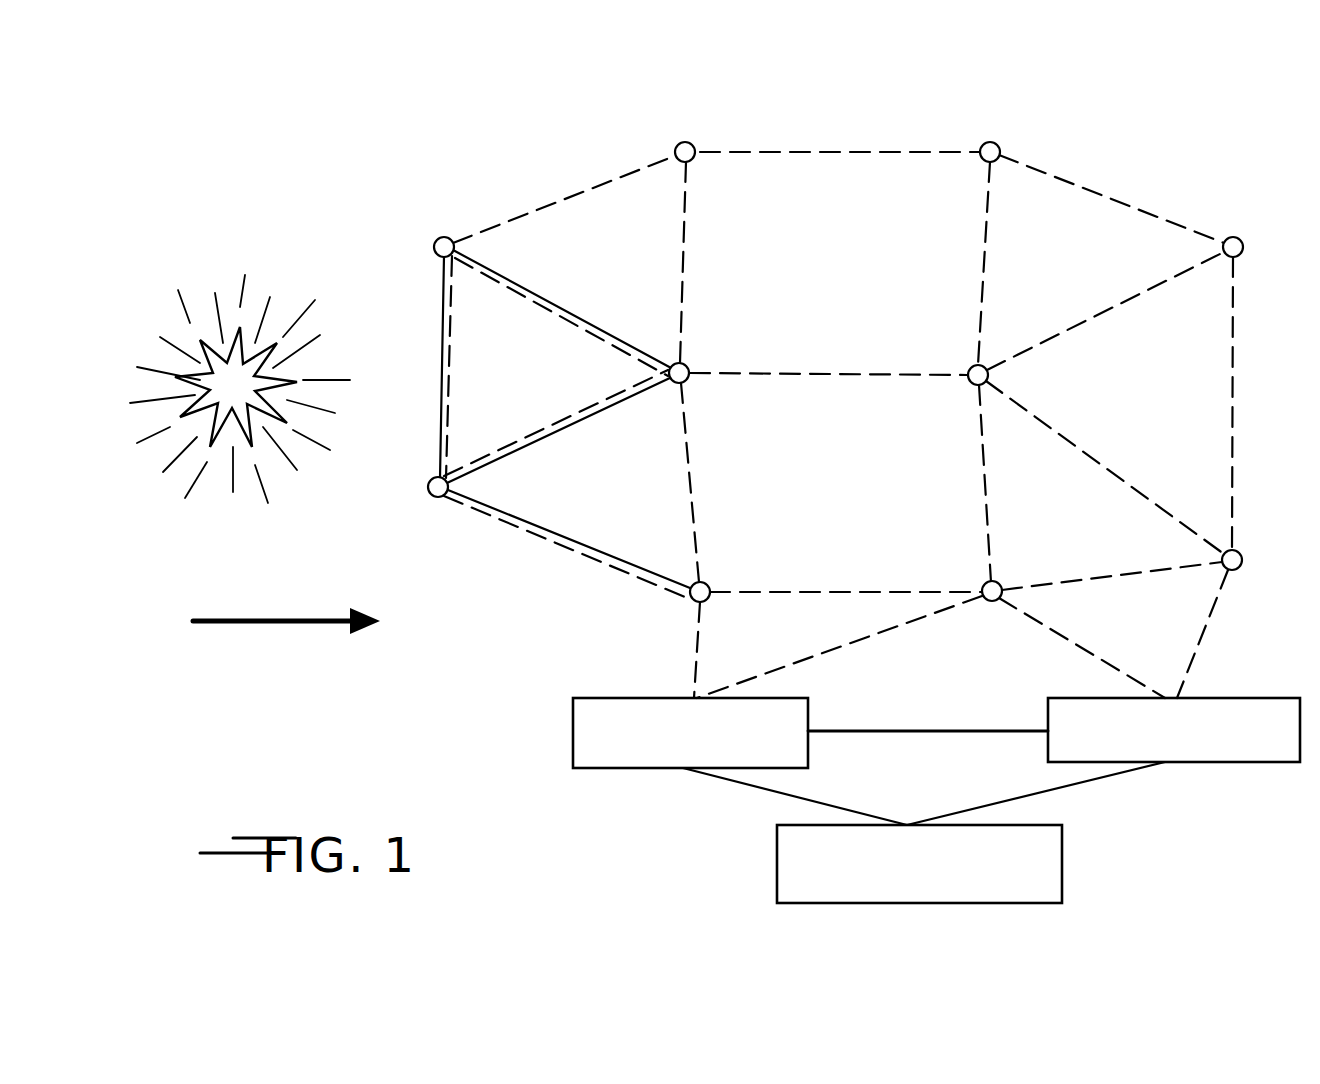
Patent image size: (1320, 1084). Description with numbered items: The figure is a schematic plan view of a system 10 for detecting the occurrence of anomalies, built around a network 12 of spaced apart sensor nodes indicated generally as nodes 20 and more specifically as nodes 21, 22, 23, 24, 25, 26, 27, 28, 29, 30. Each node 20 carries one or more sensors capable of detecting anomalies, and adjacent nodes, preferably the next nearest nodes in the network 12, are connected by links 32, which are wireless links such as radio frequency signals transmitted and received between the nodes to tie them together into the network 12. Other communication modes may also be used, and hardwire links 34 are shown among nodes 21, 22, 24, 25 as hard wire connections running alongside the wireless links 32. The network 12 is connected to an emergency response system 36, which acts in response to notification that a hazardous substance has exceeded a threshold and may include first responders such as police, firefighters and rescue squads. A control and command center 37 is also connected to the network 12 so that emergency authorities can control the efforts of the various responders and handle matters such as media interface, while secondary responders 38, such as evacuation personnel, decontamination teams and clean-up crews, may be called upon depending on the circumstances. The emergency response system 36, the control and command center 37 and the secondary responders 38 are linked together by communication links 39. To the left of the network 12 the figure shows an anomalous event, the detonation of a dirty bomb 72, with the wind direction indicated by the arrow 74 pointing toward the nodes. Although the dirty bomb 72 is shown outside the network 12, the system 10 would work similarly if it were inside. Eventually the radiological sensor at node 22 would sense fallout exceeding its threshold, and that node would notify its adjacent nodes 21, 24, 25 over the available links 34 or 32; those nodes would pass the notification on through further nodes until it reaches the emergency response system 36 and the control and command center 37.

The system 10 is at (348, 228).
The network 12 is at (1093, 163).
The nodes 20 is at (646, 150).
The node 21 is at (440, 243).
The node 22 is at (428, 492).
The node 23 is at (692, 162).
The node 24 is at (688, 383).
The node 25 is at (690, 600).
The node 26 is at (986, 143).
The node 27 is at (987, 366).
The node 28 is at (987, 582).
The node 29 is at (1240, 240).
The node 30 is at (1242, 556).
The links 32 is at (548, 210).
The hardwire links 34 is at (445, 338).
The emergency response system 36 is at (573, 730).
The control and command center 37 is at (1275, 698).
The secondary responders 38 is at (777, 860).
The communication links 39 is at (916, 729).
The dirty bomb 72 is at (241, 326).
The arrow 74 is at (276, 624).